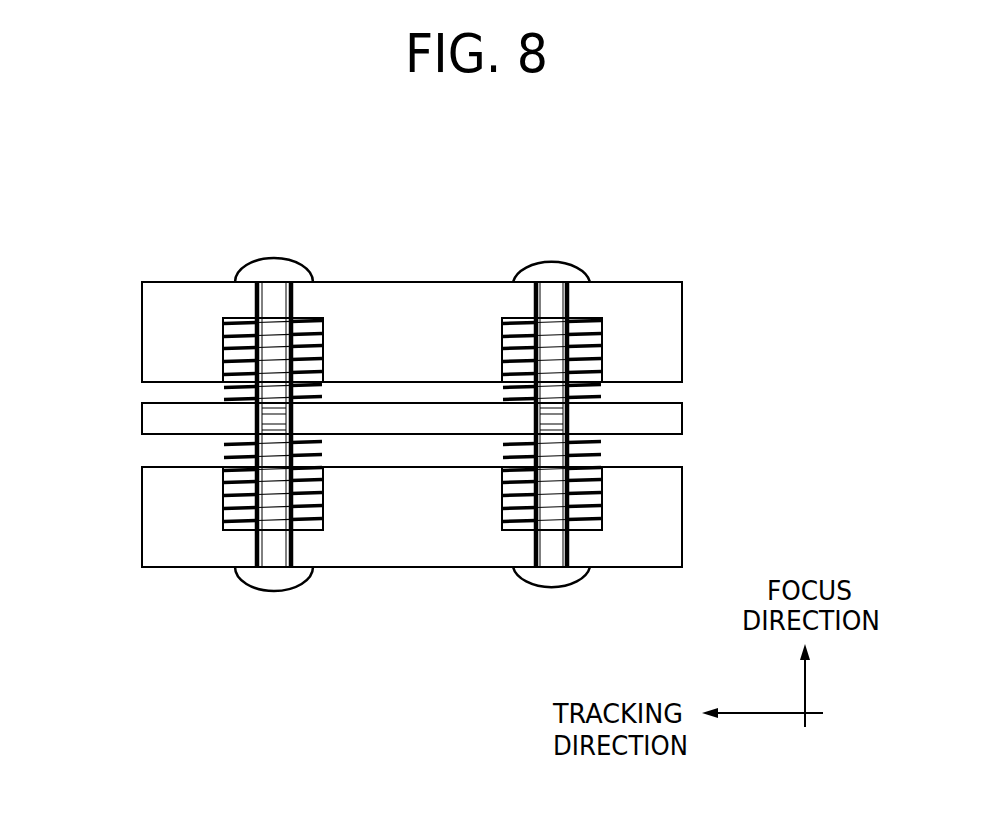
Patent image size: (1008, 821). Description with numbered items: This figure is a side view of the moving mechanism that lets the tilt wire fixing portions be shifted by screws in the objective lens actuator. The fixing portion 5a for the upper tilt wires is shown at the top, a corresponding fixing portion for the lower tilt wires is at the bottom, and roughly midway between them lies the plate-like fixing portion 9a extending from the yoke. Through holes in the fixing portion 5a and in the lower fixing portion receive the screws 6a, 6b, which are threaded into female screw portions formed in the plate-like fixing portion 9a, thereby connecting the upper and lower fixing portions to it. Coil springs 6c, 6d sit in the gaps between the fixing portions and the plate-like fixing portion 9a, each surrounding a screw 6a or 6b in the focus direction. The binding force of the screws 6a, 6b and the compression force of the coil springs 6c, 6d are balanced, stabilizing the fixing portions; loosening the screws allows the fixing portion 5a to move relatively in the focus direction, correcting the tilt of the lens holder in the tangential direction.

The fixing portion for the upper tilt wires 5a is at (682, 315).
The plate-like fixing portion 9a is at (682, 420).
The screw 6a is at (277, 258).
The screw 6b is at (554, 591).
The coil spring 6c is at (255, 391).
The coil spring 6d is at (572, 450).